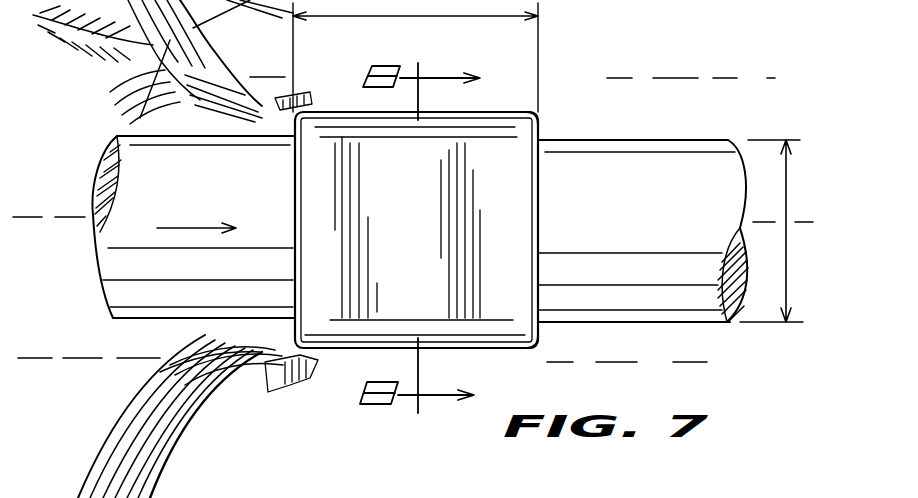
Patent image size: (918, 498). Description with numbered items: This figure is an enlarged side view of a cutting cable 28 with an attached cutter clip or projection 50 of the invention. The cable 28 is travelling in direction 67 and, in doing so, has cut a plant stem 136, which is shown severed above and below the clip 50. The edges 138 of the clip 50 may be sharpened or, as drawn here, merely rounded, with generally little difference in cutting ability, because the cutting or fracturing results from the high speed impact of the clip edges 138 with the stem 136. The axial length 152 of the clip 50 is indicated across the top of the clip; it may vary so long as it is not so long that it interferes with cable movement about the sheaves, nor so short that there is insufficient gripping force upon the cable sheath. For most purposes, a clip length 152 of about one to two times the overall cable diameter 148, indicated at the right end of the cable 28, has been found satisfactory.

The plant stem 136 is at (197, 50).
The axial length of the clip 152 is at (402, 20).
The clip edges 138 is at (540, 113).
The overall cable diameter 148 is at (790, 165).
The direction of travel 67 is at (198, 226).
The cutter clip 50 is at (413, 239).
The cutting cable 28 is at (637, 240).